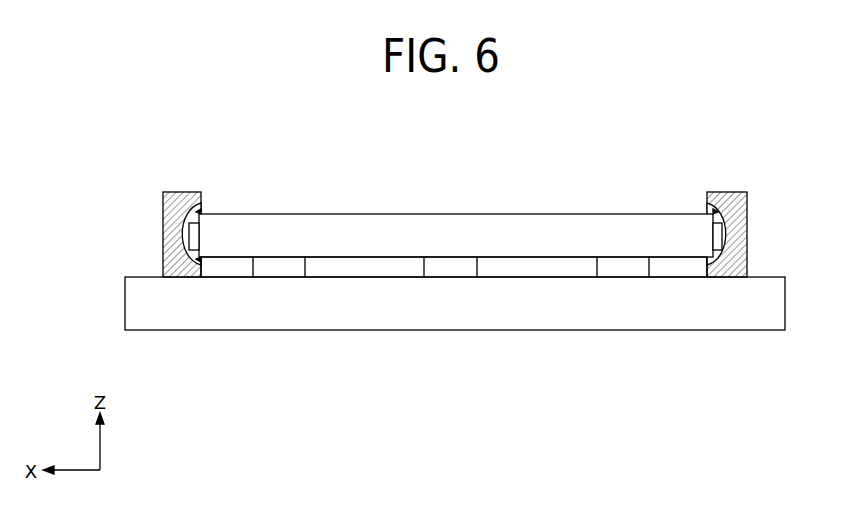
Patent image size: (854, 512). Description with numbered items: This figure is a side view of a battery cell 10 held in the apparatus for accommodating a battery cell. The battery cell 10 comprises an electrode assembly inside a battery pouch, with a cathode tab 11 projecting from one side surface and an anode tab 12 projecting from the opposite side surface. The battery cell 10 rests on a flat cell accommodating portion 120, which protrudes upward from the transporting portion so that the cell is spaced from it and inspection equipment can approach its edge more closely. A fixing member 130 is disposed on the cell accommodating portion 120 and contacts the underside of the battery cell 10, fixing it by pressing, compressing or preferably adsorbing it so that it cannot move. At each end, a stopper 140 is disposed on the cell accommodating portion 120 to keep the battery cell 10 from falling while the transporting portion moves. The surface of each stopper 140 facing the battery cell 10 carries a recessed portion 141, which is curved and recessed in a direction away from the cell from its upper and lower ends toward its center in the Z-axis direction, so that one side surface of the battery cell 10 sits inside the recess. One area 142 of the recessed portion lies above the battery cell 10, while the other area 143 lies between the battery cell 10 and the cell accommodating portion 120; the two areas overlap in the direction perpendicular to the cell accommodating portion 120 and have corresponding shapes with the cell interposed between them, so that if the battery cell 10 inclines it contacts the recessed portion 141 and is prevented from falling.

The battery cell 10 is at (455, 212).
The cathode tab 11 is at (185, 237).
The anode tab 12 is at (728, 237).
The cell accommodating portion 120 is at (125, 298).
The fixing member 130 is at (651, 266).
The stopper 140 is at (163, 198).
The recessed portion 141 is at (708, 211).
The one area of the recessed portion 142 is at (201, 212).
The other area of the recessed portion 143 is at (202, 263).